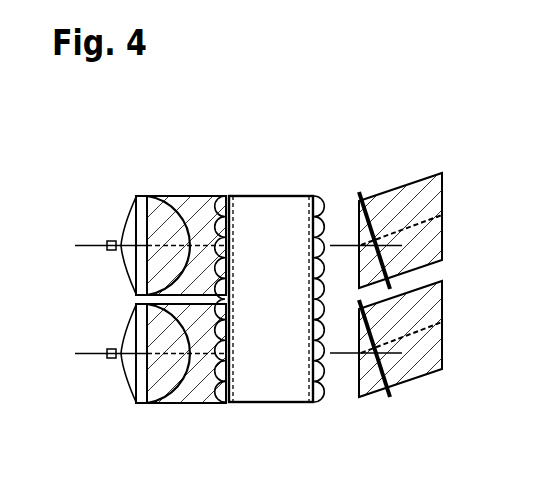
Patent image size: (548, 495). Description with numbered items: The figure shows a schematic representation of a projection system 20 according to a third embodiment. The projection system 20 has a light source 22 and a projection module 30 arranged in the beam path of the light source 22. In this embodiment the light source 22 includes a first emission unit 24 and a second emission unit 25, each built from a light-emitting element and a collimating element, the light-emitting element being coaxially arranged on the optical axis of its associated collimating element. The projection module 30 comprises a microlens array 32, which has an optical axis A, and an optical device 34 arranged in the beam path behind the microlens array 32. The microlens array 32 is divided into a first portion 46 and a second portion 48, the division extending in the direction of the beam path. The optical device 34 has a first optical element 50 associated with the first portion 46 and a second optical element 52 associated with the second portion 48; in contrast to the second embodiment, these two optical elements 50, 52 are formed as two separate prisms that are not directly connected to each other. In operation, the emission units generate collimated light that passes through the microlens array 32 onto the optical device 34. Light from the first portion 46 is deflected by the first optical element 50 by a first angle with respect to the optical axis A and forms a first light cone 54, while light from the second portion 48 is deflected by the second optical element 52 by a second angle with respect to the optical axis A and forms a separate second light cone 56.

The projection system 20 is at (252, 229).
The light source 22 is at (182, 195).
The emission unit 24 is at (116, 270).
The second emission unit 25 is at (182, 387).
The projection module 30 is at (395, 283).
The microlens array 32 is at (270, 249).
The optical device 34 is at (363, 181).
The first portion 46 is at (264, 241).
The second portion 48 is at (264, 365).
The first optical element 50 is at (391, 192).
The second optical element 52 is at (395, 376).
The first light cone 54 is at (418, 203).
The second light cone 56 is at (418, 357).
The optical axis A is at (348, 355).